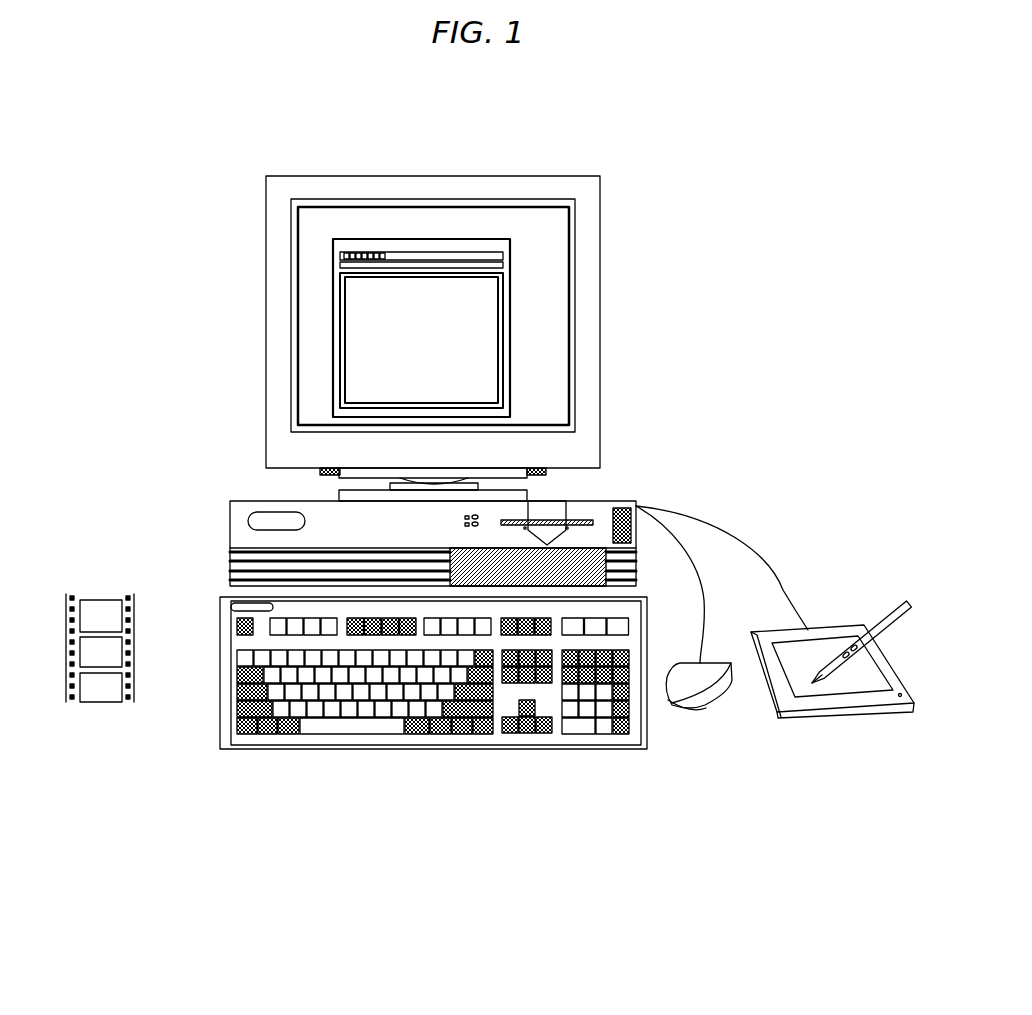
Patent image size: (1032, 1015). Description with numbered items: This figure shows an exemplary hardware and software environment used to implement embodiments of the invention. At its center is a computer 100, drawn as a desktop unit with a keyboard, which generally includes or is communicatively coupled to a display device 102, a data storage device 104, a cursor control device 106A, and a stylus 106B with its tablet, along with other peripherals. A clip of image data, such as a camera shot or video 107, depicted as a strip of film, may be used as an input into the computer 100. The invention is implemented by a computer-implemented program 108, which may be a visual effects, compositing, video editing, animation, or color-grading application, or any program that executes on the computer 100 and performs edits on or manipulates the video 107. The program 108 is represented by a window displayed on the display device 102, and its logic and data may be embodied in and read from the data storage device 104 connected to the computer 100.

The computer 100 is at (233, 518).
The display device 102 is at (582, 170).
The data storage device 104 is at (578, 520).
The cursor control device 106A is at (702, 725).
The stylus 106B is at (852, 725).
The video 107 is at (233, 552).
The program 108 is at (512, 325).